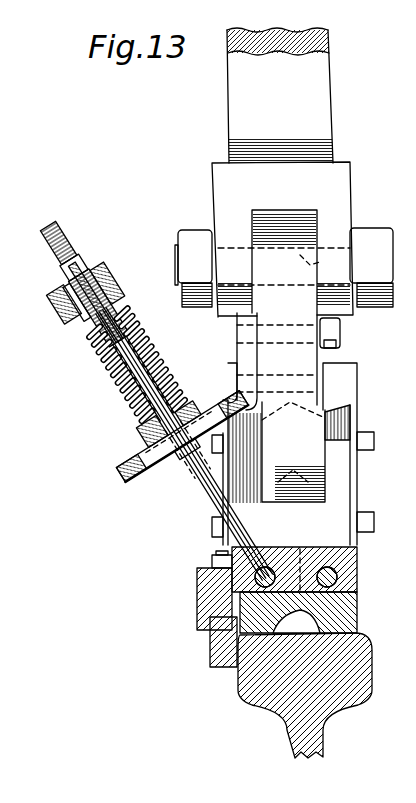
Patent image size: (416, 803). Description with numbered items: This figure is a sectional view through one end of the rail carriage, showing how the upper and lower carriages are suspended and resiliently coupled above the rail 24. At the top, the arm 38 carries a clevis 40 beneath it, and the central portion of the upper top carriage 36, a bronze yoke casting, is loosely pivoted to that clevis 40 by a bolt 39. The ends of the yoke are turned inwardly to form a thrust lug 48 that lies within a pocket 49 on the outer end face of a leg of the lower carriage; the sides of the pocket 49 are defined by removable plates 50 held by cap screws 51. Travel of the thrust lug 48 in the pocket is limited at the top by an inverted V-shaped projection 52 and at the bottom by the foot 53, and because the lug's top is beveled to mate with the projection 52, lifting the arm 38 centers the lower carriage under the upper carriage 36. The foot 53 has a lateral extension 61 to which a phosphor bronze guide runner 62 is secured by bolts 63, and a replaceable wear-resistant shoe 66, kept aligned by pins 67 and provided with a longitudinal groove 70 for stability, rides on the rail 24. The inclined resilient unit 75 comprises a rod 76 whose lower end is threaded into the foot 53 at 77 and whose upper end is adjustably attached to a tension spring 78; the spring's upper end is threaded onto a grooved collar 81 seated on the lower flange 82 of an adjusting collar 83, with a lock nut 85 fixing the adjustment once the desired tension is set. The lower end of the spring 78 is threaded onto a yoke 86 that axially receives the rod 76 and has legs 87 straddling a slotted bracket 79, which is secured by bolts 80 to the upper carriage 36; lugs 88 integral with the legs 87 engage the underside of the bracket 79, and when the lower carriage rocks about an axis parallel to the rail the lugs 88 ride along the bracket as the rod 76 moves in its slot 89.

The rail 24 is at (258, 702).
The upper top carriage 36 is at (309, 272).
The arm 38 is at (330, 95).
The bolt 39 is at (180, 248).
The clevis 40 is at (351, 175).
The thrust lug 48 is at (302, 464).
The pocket 49 is at (345, 432).
The removable plate 50 is at (360, 468).
The cap screw 51 is at (375, 441).
The inverted V-shaped projection 52 is at (332, 410).
The foot 53 is at (359, 557).
The lateral extension 61 is at (197, 598).
The guide runner 62 is at (208, 660).
The bolt 63 is at (212, 560).
The replaceable shoe 66 is at (359, 605).
The pin 67 is at (304, 556).
The longitudinal groove 70 is at (313, 637).
The resilient unit 75 is at (110, 401).
The rod 76 is at (200, 484).
The threaded connection 77 is at (263, 562).
The tension spring 78 is at (105, 367).
The slotted bracket 79 is at (133, 478).
The bolt 80 is at (342, 332).
The grooved collar 81 is at (112, 270).
The lower flange 82 is at (80, 338).
The adjusting collar 83 is at (92, 270).
The lock nut 85 is at (70, 250).
The yoke 86 is at (138, 422).
The leg 87 is at (157, 450).
The lug 88 is at (187, 462).
The slot 89 is at (162, 470).